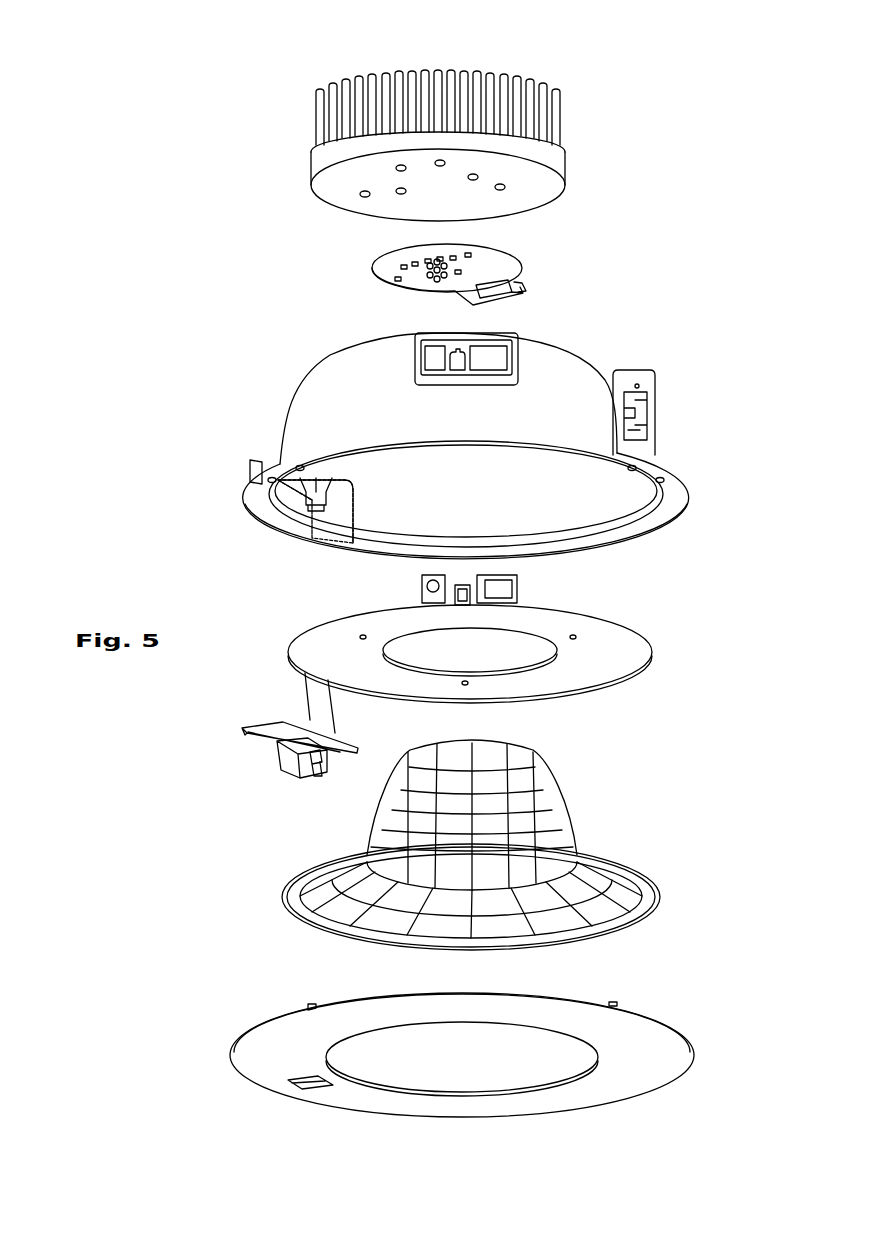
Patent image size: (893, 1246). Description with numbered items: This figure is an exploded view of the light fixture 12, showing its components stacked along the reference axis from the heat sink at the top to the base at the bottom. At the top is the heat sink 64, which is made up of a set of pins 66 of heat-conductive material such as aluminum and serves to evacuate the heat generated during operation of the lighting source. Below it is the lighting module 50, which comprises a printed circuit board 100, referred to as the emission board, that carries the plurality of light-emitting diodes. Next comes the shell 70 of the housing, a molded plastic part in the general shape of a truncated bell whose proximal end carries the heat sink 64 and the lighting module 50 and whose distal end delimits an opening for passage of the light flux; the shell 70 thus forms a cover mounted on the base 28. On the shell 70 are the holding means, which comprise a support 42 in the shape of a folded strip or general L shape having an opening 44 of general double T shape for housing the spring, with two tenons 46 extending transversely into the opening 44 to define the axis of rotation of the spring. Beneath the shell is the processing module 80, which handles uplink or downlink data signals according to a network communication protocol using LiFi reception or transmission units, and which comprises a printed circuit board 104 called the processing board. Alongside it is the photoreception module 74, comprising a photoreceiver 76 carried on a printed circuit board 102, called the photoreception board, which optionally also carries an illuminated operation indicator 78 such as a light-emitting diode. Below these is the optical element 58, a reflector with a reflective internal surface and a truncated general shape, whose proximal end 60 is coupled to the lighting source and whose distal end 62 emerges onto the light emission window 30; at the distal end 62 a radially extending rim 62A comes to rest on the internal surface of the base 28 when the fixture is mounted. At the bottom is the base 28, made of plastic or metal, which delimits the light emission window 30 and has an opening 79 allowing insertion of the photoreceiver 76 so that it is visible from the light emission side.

The light fixture 12 is at (216, 282).
The base 28 is at (488, 1067).
The light emission window 30 is at (600, 1057).
The support 42 is at (654, 392).
The opening 44 is at (637, 386).
The tenons 46 is at (649, 418).
The lighting module 50 is at (484, 265).
The optical element 58 is at (504, 841).
The proximal end 60 is at (520, 751).
The distal end 62 is at (504, 896).
The rim 62A is at (628, 873).
The heat sink 64 is at (475, 116).
The pins 66 is at (557, 95).
The shell 70 is at (483, 430).
The photoreception module 74 is at (287, 746).
The photoreceiver 76 is at (288, 778).
The illuminated operation indicator 78 is at (322, 780).
The opening 79 is at (310, 1087).
The processing module 80 is at (499, 631).
The printed circuit board 100 is at (472, 264).
The printed circuit board 102 is at (268, 718).
The printed circuit board 104 is at (622, 657).